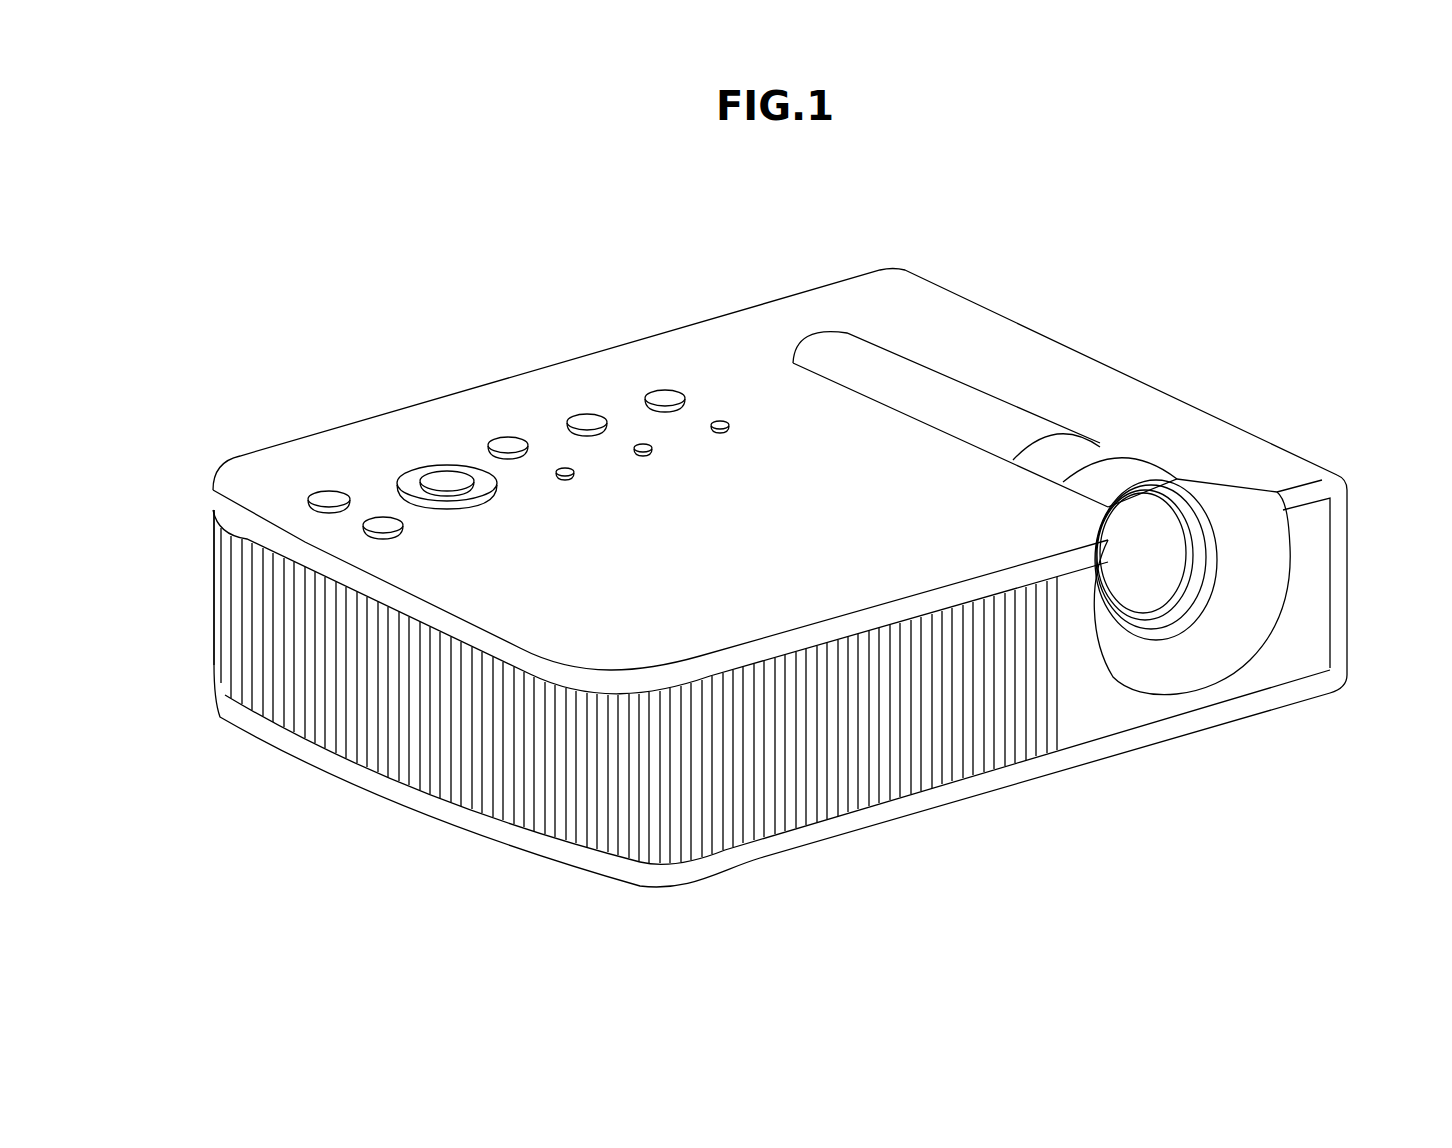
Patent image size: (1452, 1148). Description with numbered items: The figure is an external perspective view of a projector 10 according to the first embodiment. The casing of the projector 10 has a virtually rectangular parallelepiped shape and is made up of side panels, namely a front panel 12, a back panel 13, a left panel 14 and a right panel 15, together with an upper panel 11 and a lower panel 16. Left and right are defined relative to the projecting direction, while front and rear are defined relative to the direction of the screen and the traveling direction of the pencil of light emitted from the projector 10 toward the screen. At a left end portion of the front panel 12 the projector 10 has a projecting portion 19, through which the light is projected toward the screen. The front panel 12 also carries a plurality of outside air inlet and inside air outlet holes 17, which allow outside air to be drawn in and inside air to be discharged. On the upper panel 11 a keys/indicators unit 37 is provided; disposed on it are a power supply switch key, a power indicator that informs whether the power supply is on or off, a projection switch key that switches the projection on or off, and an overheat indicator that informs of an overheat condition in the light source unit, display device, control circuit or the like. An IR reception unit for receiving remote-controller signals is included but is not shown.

The projector 10 is at (966, 208).
The upper panel 11 is at (697, 348).
The front panel 12 is at (1085, 703).
The back panel 13 is at (210, 575).
The left panel 14 is at (1338, 560).
The right panel 15 is at (288, 698).
The lower panel 16 is at (423, 804).
The outside air inlet and inside air outlet holes 17 is at (810, 793).
The projecting portion 19 is at (1200, 660).
The keys/indicators unit 37 is at (440, 462).